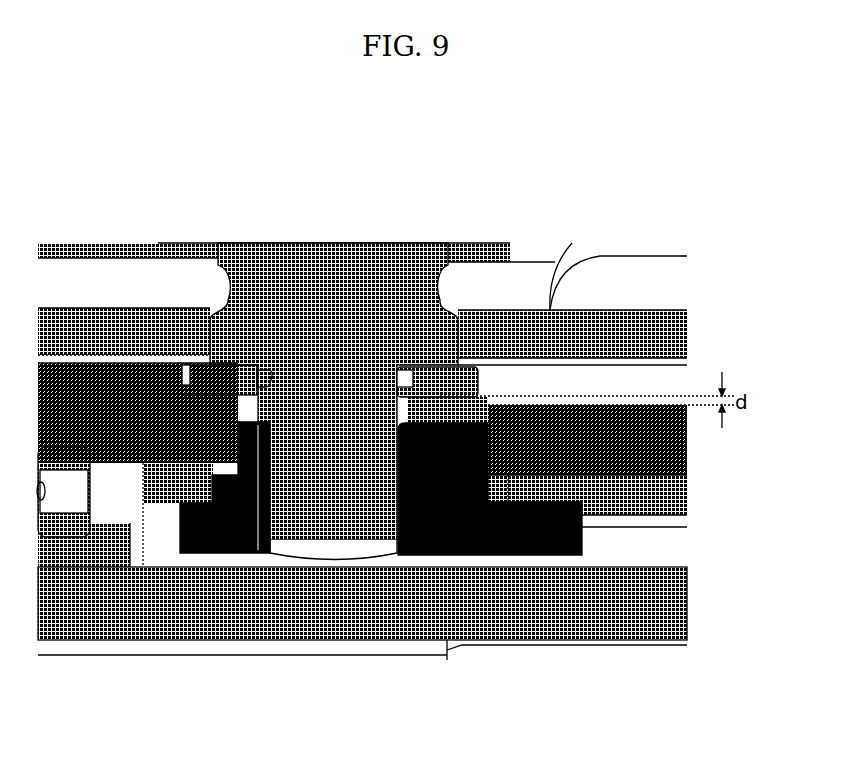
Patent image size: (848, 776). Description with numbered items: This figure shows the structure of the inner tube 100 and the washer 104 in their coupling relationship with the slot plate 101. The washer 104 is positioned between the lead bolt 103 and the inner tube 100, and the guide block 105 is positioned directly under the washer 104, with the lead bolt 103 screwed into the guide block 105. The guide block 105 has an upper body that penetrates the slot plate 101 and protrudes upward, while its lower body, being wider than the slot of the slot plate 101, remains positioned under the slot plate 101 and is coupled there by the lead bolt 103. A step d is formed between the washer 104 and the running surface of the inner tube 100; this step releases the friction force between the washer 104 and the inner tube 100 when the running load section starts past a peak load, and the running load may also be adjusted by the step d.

The inner tube 100 is at (668, 445).
The slot plate 101 is at (623, 500).
The lead bolt 103 is at (327, 287).
The washer 104 is at (447, 365).
The guide block 105 is at (230, 553).